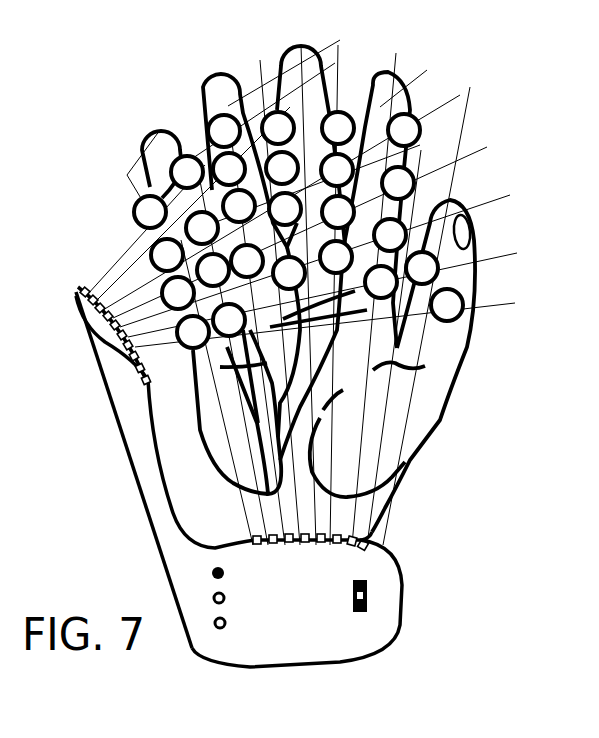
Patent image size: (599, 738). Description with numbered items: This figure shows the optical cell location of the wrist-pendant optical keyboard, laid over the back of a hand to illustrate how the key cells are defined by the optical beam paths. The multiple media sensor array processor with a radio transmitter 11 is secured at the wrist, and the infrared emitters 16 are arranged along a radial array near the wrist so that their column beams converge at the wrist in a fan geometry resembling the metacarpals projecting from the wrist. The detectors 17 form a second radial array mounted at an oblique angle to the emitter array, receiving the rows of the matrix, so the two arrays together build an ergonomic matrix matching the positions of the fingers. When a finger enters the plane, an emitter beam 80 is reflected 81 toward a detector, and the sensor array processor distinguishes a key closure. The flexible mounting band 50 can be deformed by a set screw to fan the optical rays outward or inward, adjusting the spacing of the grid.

The multiple media sensor array processor with a radio transmitter 11 is at (363, 635).
The infrared emitters 16 is at (392, 536).
The detectors 17 is at (106, 341).
The flexible mounting band 50 is at (420, 137).
The emitter beam 80 is at (163, 120).
The reflected beam 81 is at (488, 200).